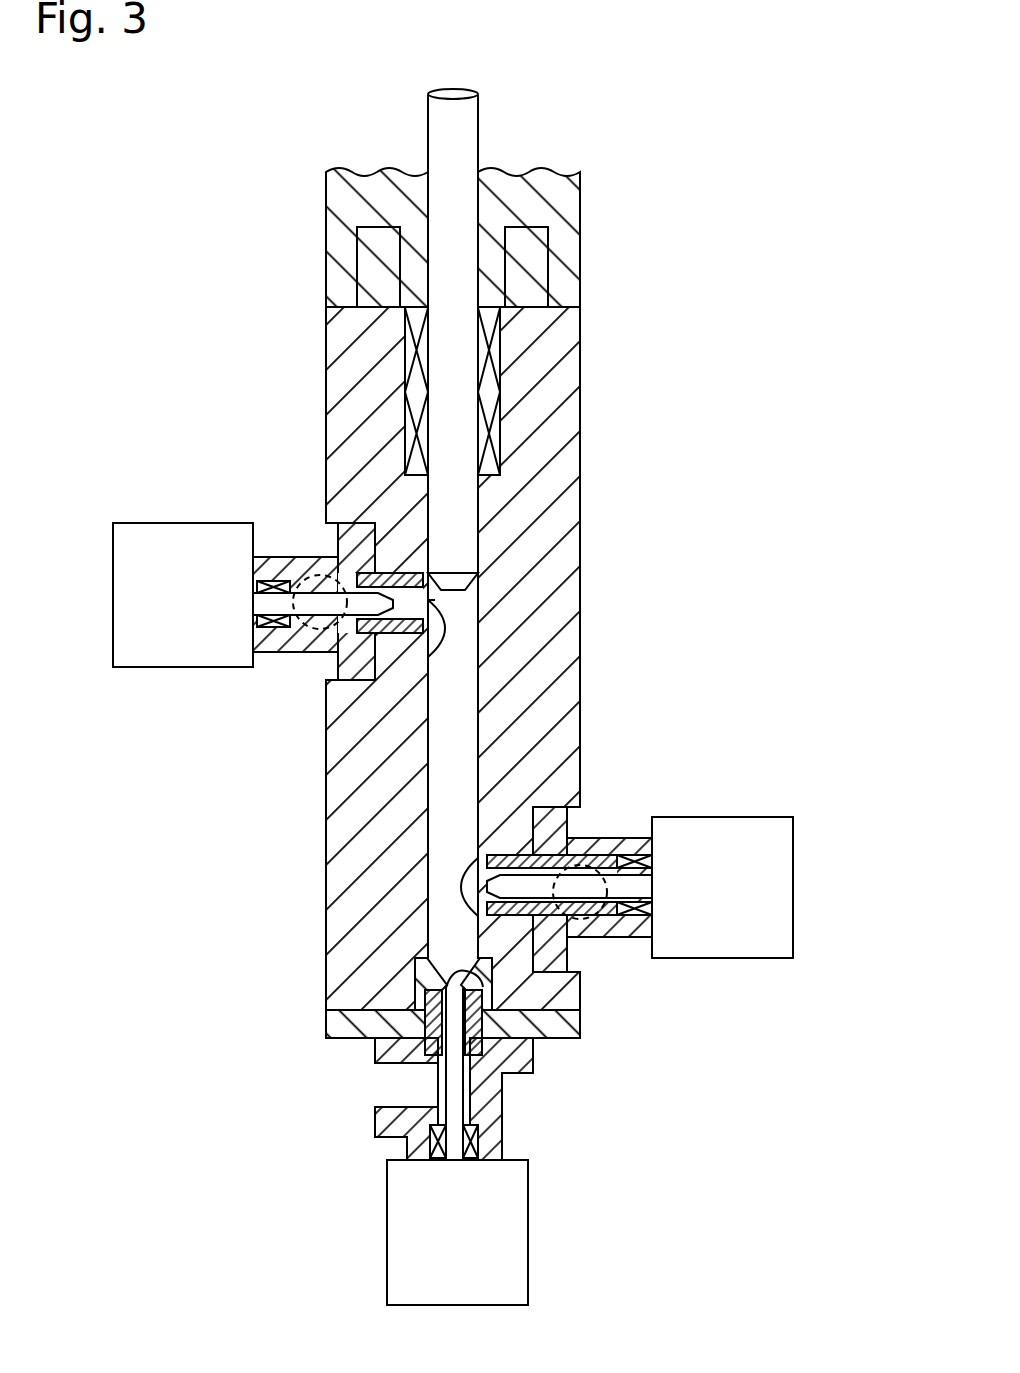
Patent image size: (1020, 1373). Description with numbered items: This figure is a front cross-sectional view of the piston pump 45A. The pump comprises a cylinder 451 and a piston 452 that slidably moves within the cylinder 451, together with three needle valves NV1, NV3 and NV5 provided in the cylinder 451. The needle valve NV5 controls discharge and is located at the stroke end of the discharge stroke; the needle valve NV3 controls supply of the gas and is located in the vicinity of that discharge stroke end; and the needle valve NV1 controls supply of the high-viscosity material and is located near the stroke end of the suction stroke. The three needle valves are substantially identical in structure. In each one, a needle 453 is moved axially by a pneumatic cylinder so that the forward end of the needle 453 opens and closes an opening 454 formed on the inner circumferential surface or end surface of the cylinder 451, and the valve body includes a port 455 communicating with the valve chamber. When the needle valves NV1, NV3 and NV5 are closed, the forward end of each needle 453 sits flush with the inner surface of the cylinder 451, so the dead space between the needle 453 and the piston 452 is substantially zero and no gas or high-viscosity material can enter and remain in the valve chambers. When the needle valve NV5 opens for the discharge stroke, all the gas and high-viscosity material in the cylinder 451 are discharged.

The piston pump 45A is at (368, 94).
The cylinder 451 is at (562, 480).
The piston 452 is at (470, 118).
The needle 453 is at (313, 607).
The opening 454 is at (428, 658).
The port 455 is at (313, 578).
The needle valve NV1 is at (191, 508).
The needle valve NV3 is at (735, 805).
The needle valve NV5 is at (545, 1244).